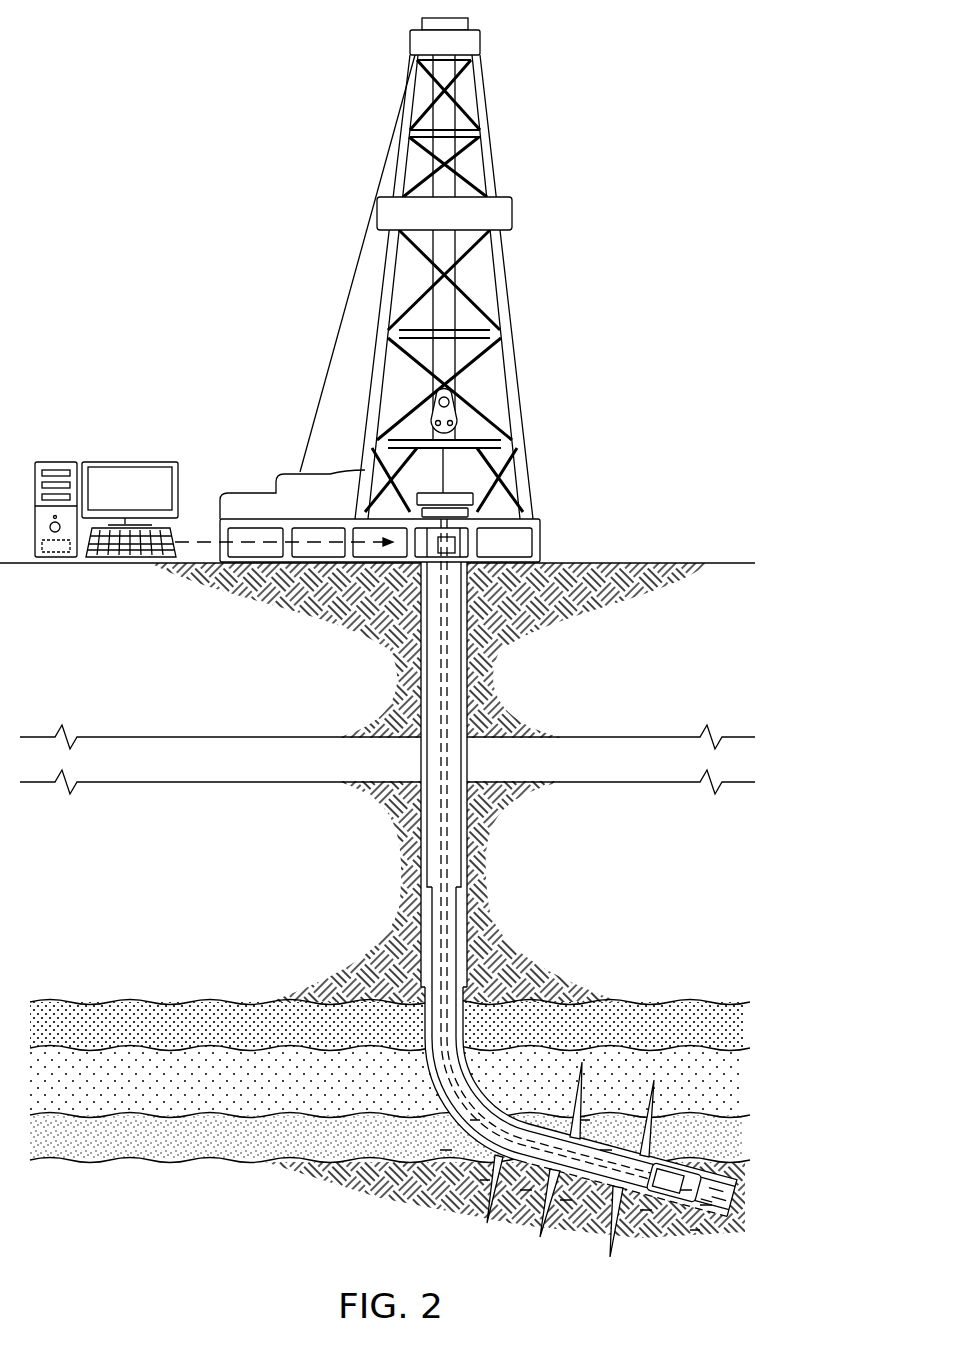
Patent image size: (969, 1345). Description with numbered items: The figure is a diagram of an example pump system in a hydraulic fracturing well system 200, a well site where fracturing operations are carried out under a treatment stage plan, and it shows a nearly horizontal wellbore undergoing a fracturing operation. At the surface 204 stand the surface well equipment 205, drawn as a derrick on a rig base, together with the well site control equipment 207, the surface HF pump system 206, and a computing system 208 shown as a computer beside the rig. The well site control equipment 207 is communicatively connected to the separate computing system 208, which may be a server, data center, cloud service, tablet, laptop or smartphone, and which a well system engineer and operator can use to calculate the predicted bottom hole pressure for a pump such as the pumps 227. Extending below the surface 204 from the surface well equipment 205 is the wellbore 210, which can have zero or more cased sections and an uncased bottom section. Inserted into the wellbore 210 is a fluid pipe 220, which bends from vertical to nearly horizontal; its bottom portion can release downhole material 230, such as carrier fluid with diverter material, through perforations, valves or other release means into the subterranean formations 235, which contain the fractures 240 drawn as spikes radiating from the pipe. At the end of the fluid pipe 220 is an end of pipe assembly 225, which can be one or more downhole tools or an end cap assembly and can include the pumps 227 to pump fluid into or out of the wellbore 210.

The hydraulic fracturing well system 200 is at (287, 63).
The surface 204 is at (655, 562).
The surface well equipment 205 is at (495, 165).
The surface HF pump system 206 is at (453, 542).
The well site control equipment 207 is at (397, 560).
The computing system 208 is at (130, 462).
The wellbore 210 is at (420, 705).
The fluid pipe 220 is at (437, 1083).
The end of pipe assembly 225 is at (737, 1180).
The pumps 227 is at (717, 1222).
The downhole material 230 is at (450, 1118).
The subterranean formations 235 is at (669, 974).
The fractures 240 is at (645, 1252).